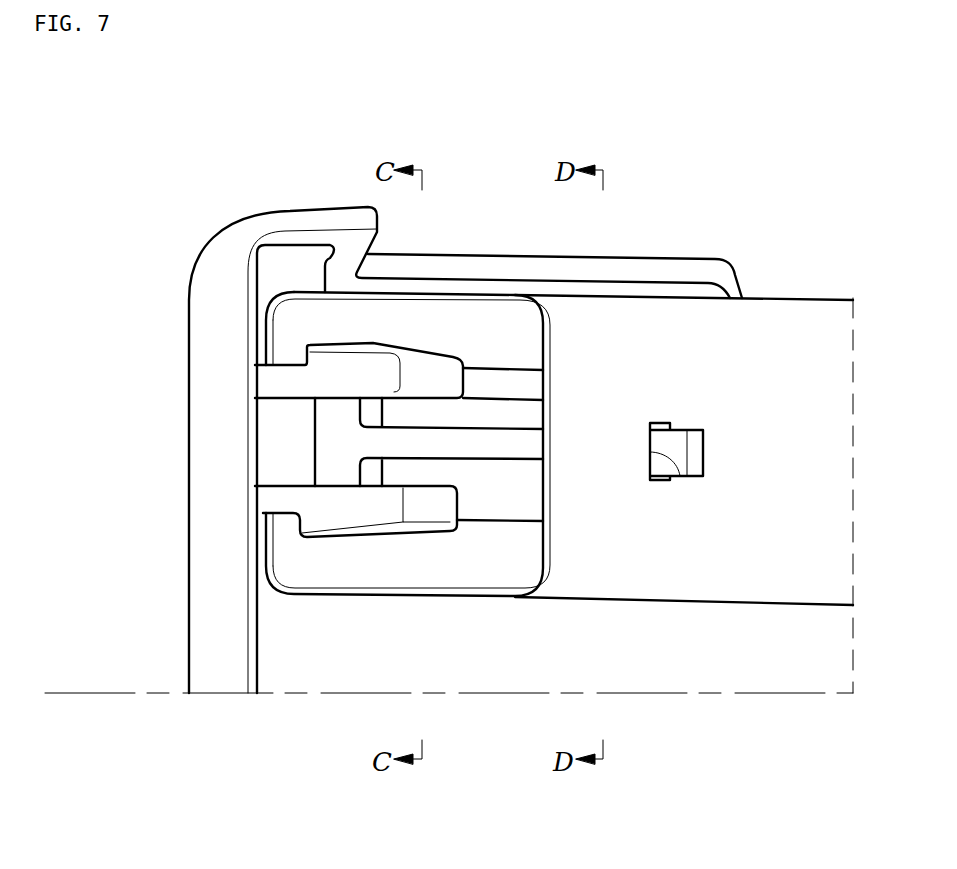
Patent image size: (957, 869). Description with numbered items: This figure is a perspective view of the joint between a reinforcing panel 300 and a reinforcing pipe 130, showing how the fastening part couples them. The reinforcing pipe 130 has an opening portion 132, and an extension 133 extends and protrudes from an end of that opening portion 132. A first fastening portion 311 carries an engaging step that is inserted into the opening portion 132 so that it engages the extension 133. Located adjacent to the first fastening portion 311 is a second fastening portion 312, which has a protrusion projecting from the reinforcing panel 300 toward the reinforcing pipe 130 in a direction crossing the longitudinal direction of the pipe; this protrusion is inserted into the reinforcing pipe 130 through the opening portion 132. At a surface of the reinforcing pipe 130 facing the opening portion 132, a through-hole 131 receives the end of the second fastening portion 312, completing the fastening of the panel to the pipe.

The reinforcing pipe 130 is at (771, 288).
The through-hole 131 is at (680, 476).
The opening portion 132 is at (291, 447).
The extension 133 is at (295, 340).
The reinforcing panel 300 is at (238, 206).
The first fastening portion 311 is at (342, 372).
The second fastening portion 312 is at (485, 447).